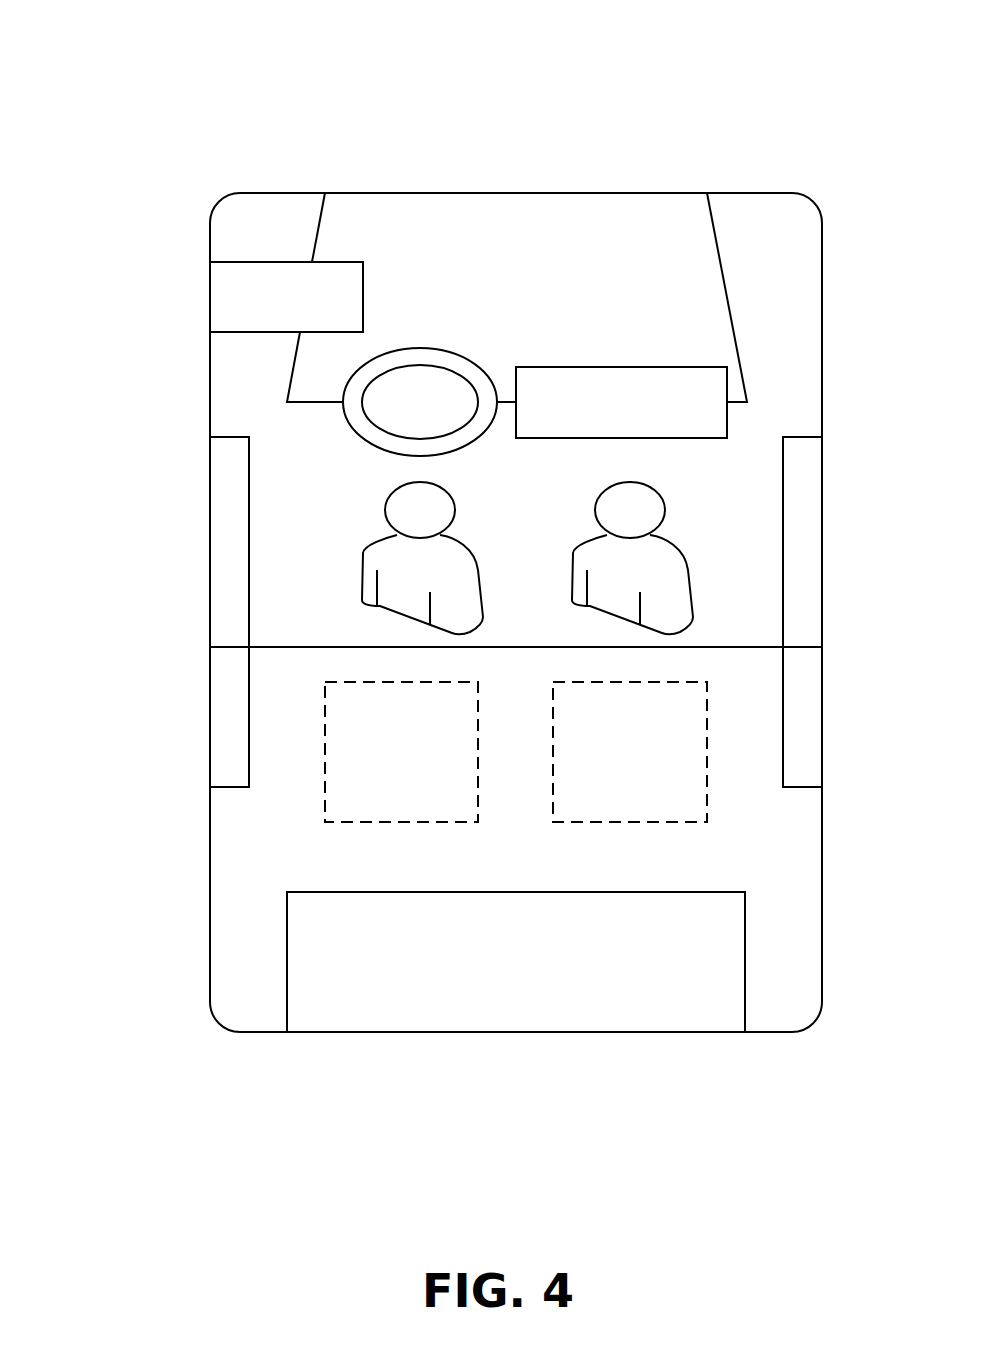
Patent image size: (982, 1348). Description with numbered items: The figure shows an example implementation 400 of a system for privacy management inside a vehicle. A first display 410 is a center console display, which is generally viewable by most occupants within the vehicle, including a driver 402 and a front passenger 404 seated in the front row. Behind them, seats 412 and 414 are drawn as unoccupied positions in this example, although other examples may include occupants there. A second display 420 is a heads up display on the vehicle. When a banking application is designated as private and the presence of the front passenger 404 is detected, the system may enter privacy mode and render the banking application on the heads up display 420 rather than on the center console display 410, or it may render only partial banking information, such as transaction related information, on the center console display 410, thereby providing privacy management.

The example implementation 400 is at (158, 41).
The driver 402 is at (373, 540).
The front passenger 404 is at (593, 540).
The first display 410 is at (621, 402).
The seat 412 is at (401, 752).
The seat 414 is at (630, 752).
The second display 420 is at (286, 297).